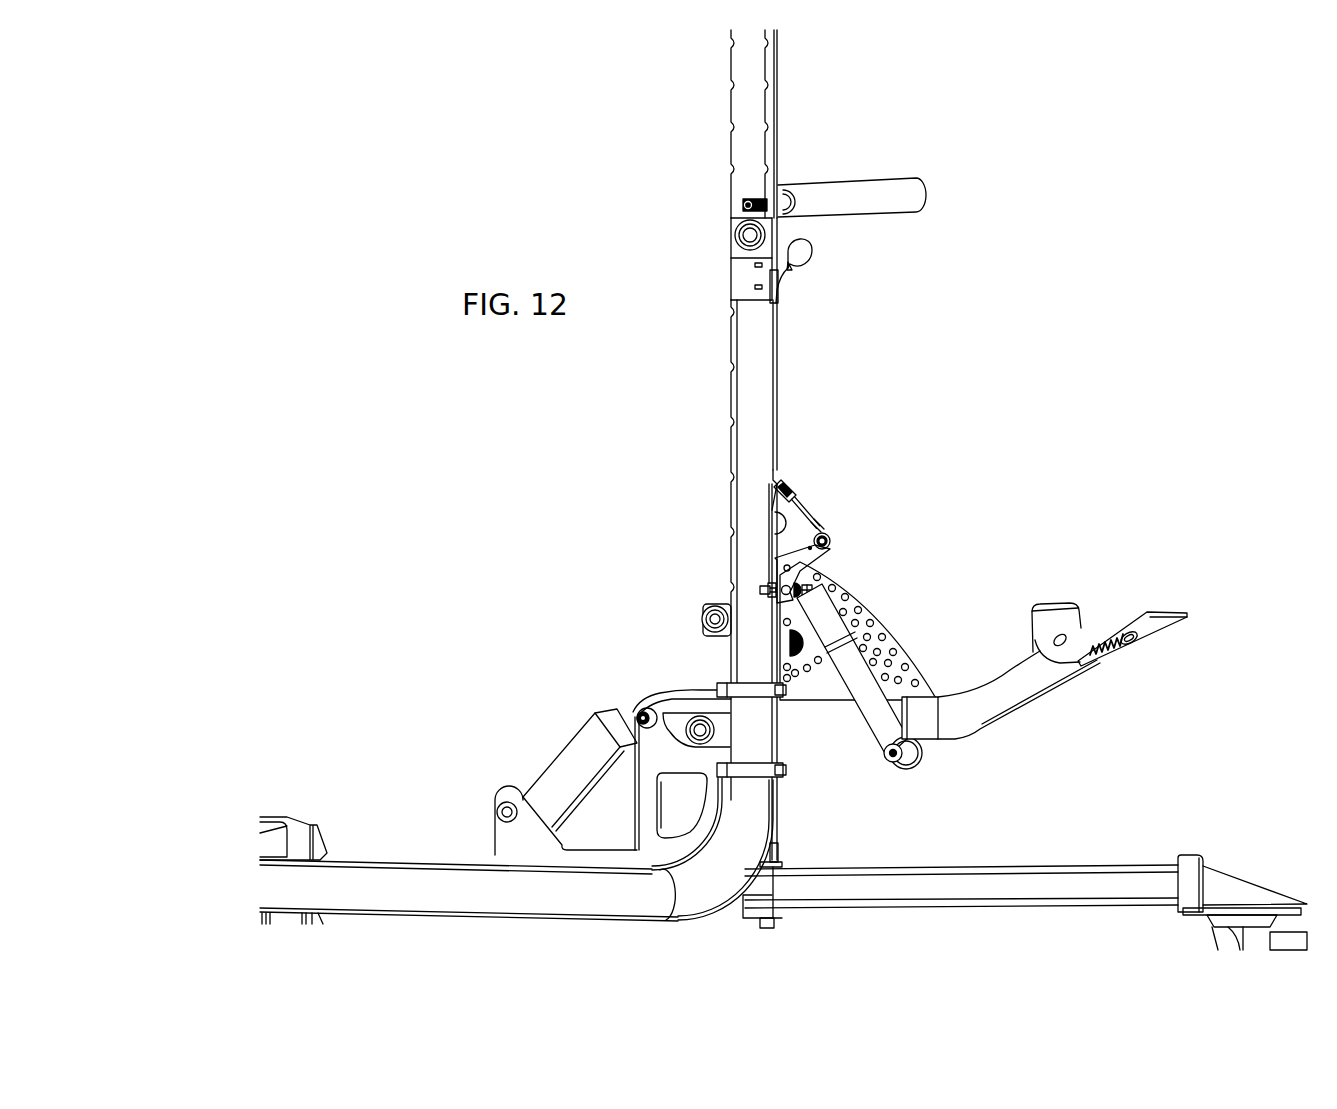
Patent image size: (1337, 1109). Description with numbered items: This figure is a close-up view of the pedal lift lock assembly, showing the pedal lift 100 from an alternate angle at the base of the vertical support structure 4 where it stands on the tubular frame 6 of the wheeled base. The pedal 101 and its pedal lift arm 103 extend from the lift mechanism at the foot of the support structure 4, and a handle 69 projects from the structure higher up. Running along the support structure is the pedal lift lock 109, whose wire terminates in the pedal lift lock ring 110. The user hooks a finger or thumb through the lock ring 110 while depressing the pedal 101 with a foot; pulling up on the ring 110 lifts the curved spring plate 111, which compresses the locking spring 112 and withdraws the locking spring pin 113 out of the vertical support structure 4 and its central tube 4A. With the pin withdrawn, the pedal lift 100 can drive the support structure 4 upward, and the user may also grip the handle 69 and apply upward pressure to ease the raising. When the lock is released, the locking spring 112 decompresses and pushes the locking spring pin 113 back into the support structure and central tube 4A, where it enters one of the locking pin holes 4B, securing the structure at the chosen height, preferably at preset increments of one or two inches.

The vertical support structure 4 is at (772, 415).
The central tube 4A is at (750, 88).
The locking pin holes 4B is at (772, 104).
The frame 6 is at (1014, 880).
The handle 69 is at (917, 193).
The pedal lift 100 is at (968, 552).
The pedal 101 is at (1152, 632).
The pedal lift arm 103 is at (725, 668).
The pedal lift lock 109 is at (778, 420).
The pedal lift lock ring 110 is at (810, 262).
The curved spring plate 111 is at (830, 553).
The locking spring 112 is at (855, 624).
The locking spring pin 113 is at (768, 588).